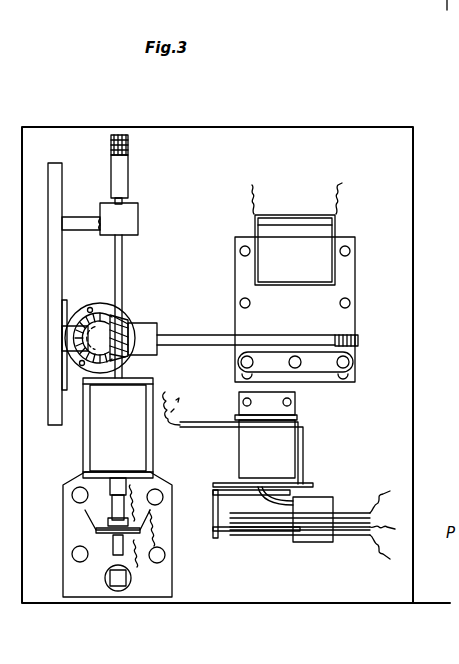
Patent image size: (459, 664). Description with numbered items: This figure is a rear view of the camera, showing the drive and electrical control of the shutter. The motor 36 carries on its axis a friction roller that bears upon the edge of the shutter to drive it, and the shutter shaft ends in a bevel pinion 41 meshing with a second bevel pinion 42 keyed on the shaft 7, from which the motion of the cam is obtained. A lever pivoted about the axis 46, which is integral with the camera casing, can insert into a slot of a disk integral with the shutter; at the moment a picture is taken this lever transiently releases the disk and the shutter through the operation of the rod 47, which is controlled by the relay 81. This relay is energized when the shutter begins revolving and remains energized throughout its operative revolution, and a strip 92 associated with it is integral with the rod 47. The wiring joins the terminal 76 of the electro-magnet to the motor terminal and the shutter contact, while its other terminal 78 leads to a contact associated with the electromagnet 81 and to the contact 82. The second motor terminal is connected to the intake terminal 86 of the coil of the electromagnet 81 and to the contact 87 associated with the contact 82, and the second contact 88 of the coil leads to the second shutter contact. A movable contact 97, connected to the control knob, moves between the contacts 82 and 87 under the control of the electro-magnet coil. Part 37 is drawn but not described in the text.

The shaft 7 is at (205, 343).
The motor 36 is at (298, 230).
The roller bar with rollers 37 is at (295, 358).
The bevel pinion 41 is at (92, 320).
The second bevel pinion 42 is at (128, 326).
The axis 46 is at (75, 222).
The rod 47 is at (119, 254).
The terminal of the electro-magnet 76 is at (168, 394).
The terminal of the electro-magnet 78 is at (180, 400).
The relay 81 is at (138, 441).
The contact 82 is at (236, 514).
The intake terminal of the coil 86 is at (157, 562).
The contact 87 is at (251, 533).
The second contact of the coil 88 is at (72, 498).
The strip 92 is at (88, 527).
The contact 97 is at (222, 532).